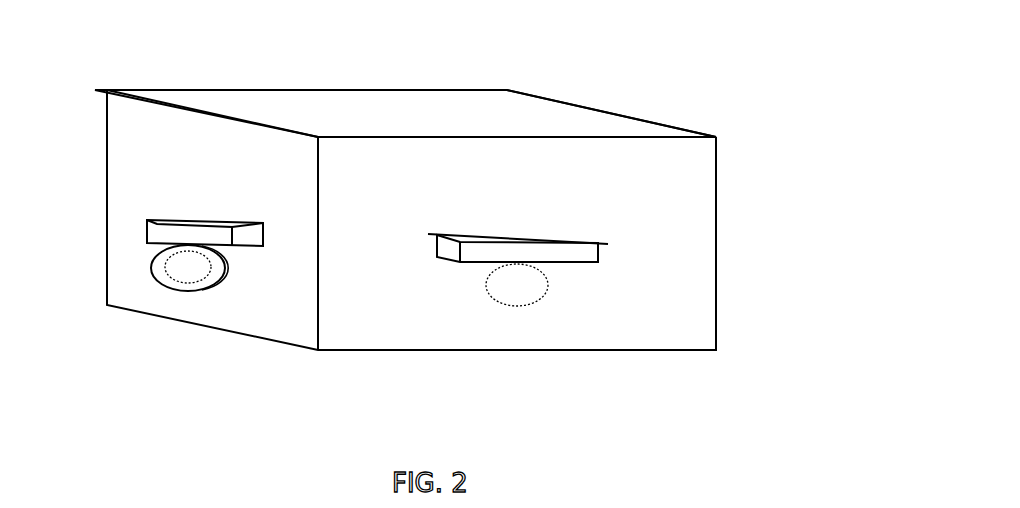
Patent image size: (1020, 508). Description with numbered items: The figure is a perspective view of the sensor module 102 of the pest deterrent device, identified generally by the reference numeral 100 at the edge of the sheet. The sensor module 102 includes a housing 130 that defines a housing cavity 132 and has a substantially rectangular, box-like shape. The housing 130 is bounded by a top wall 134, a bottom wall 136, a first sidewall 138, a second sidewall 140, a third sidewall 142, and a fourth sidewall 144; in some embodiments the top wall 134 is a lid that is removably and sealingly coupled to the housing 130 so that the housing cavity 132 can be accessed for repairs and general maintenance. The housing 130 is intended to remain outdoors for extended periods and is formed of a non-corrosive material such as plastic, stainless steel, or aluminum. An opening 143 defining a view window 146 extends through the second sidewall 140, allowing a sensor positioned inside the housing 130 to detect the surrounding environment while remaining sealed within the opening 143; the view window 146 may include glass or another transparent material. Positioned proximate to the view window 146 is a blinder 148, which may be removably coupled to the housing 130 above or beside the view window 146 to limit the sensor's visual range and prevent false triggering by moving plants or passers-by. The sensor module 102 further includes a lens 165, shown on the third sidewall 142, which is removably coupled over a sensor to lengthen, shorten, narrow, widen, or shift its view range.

The system 100 is at (855, 507).
The sensor module 102 is at (745, 93).
The housing 130 is at (318, 108).
The housing cavity 132 is at (570, 103).
The top wall 134 is at (443, 97).
The bottom wall 136 is at (627, 350).
The first sidewall 138 is at (716, 213).
The second sidewall 140 is at (428, 196).
The third sidewall 142 is at (236, 196).
The opening 143 is at (548, 350).
The fourth sidewall 144 is at (107, 150).
The view window 146 is at (492, 297).
The blinder 148 is at (443, 258).
The lens 165 is at (165, 290).